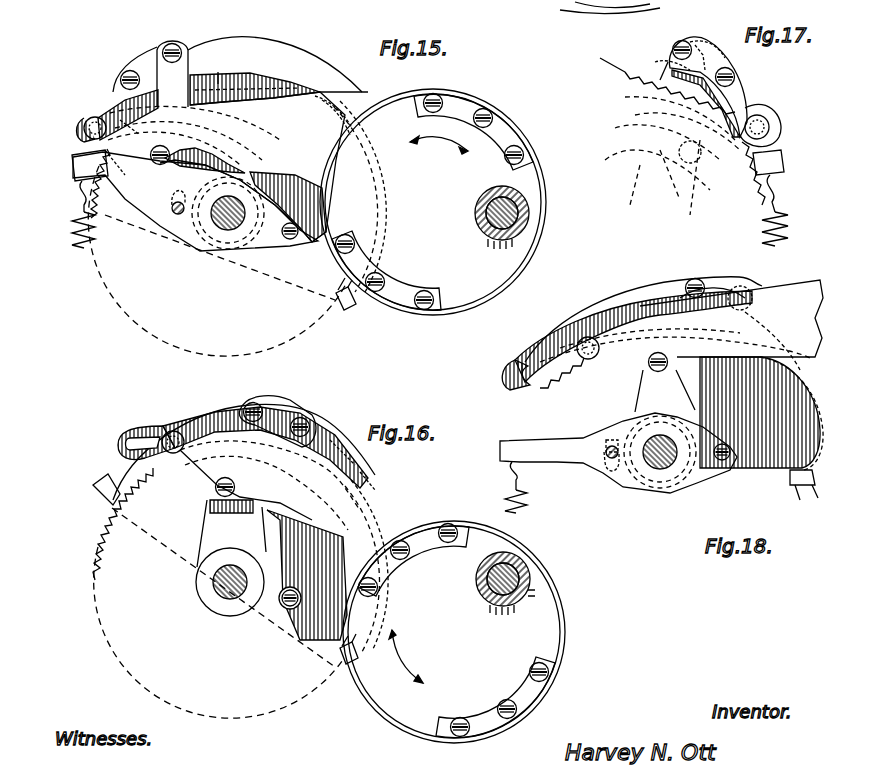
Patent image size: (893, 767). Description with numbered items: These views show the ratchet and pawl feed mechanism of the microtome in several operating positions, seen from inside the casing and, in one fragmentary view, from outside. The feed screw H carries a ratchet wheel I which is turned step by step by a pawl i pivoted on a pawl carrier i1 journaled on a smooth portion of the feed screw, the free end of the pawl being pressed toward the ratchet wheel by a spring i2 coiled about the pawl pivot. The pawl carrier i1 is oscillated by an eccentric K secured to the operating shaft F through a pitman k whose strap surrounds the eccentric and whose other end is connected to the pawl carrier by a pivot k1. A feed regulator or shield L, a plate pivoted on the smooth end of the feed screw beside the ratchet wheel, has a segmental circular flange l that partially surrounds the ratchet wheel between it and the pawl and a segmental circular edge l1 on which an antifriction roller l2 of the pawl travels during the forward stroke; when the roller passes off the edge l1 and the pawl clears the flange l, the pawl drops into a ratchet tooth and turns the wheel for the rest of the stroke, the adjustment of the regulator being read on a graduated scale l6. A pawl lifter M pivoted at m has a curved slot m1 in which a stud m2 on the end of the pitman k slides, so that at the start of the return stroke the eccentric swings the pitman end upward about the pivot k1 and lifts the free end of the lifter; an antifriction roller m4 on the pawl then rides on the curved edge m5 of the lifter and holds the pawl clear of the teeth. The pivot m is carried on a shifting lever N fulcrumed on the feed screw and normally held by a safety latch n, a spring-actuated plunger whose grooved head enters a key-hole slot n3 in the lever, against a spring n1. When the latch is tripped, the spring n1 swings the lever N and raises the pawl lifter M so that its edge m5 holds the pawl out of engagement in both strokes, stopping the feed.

In FIG. 15, the eccentric K is at (433, 202).
In FIG. 16, the eccentric K is at (454, 632).
In FIG. 15, the operating shaft F is at (488, 214).
In FIG. 16, the operating shaft F is at (493, 606).
In FIG. 15, the ratchet wheel I is at (237, 228).
In FIG. 16, the ratchet wheel I is at (240, 593).
In FIG. 17, the ratchet wheel I is at (686, 127).
In FIG. 15, the shifting lever N is at (263, 240).
In FIG. 18, the shifting lever N is at (618, 468).
In FIG. 15, the feed screw H is at (222, 228).
In FIG. 16, the feed screw H is at (224, 592).
In FIG. 18, the feed screw H is at (660, 470).
In FIG. 15, the pivot m is at (290, 240).
In FIG. 16, the pivot m is at (285, 605).
In FIG. 18, the pivot m is at (722, 462).
In FIG. 15, the key-hole slot n3 is at (173, 209).
In FIG. 18, the key-hole slot n3 is at (608, 458).
In FIG. 15, the safety latch n is at (176, 214).
In FIG. 18, the safety latch n is at (604, 448).
In FIG. 15, the stud m2 is at (75, 152).
In FIG. 16, the stud m2 is at (170, 431).
In FIG. 17, the stud m2 is at (770, 128).
In FIG. 18, the stud m2 is at (583, 359).
In FIG. 15, the spring n1 is at (82, 250).
In FIG. 17, the spring n1 is at (788, 222).
In FIG. 18, the spring n1 is at (528, 505).
In FIG. 15, the pawl lifter M is at (88, 124).
In FIG. 16, the pawl lifter M is at (225, 425).
In FIG. 17, the pawl lifter M is at (738, 95).
In FIG. 18, the pawl lifter M is at (630, 305).
In FIG. 15, the antifriction roller m4 is at (121, 77).
In FIG. 16, the antifriction roller m4 is at (256, 401).
In FIG. 18, the antifriction roller m4 is at (700, 276).
In FIG. 15, the pawl i is at (142, 62).
In FIG. 16, the pawl i is at (290, 405).
In FIG. 17, the pawl i is at (716, 52).
In FIG. 18, the pawl i is at (722, 286).
In FIG. 15, the spring i2 is at (177, 40).
In FIG. 16, the spring i2 is at (312, 418).
In FIG. 17, the spring i2 is at (703, 38).
In FIG. 18, the spring i2 is at (748, 288).
In FIG. 15, the pawl carrier i1 is at (192, 48).
In FIG. 16, the pawl carrier i1 is at (236, 520).
In FIG. 17, the pawl carrier i1 is at (670, 40).
In FIG. 18, the pawl carrier i1 is at (660, 382).
In FIG. 15, the graduated scale l6 is at (262, 38).
In FIG. 16, the graduated scale l6 is at (108, 472).
In FIG. 18, the graduated scale l6 is at (612, 298).
In FIG. 15, the segmental circular flange l is at (275, 82).
In FIG. 16, the segmental circular flange l is at (345, 672).
In FIG. 18, the segmental circular flange l is at (810, 492).
In FIG. 15, the segmental circular edge l1 is at (320, 92).
In FIG. 16, the segmental circular edge l1 is at (370, 482).
In FIG. 18, the segmental circular edge l1 is at (813, 465).
In FIG. 17, the antifriction roller l2 is at (737, 72).
In FIG. 15, the curved edge m5 is at (217, 65).
In FIG. 16, the curved edge m5 is at (334, 442).
In FIG. 17, the curved edge m5 is at (660, 66).
In FIG. 18, the curved edge m5 is at (590, 325).
In FIG. 15, the curved slot m1 is at (238, 134).
In FIG. 16, the curved slot m1 is at (124, 440).
In FIG. 17, the curved slot m1 is at (768, 108).
In FIG. 18, the curved slot m1 is at (520, 370).
In FIG. 15, the pitman k is at (252, 167).
In FIG. 16, the pitman k is at (291, 545).
In FIG. 17, the pitman k is at (640, 165).
In FIG. 18, the pitman k is at (731, 375).
In FIG. 15, the pivot k1 is at (150, 153).
In FIG. 16, the pivot k1 is at (215, 495).
In FIG. 17, the pivot k1 is at (685, 163).
In FIG. 18, the pivot k1 is at (656, 350).
In FIG. 15, the feed regulator L is at (350, 310).
In FIG. 16, the feed regulator L is at (110, 502).